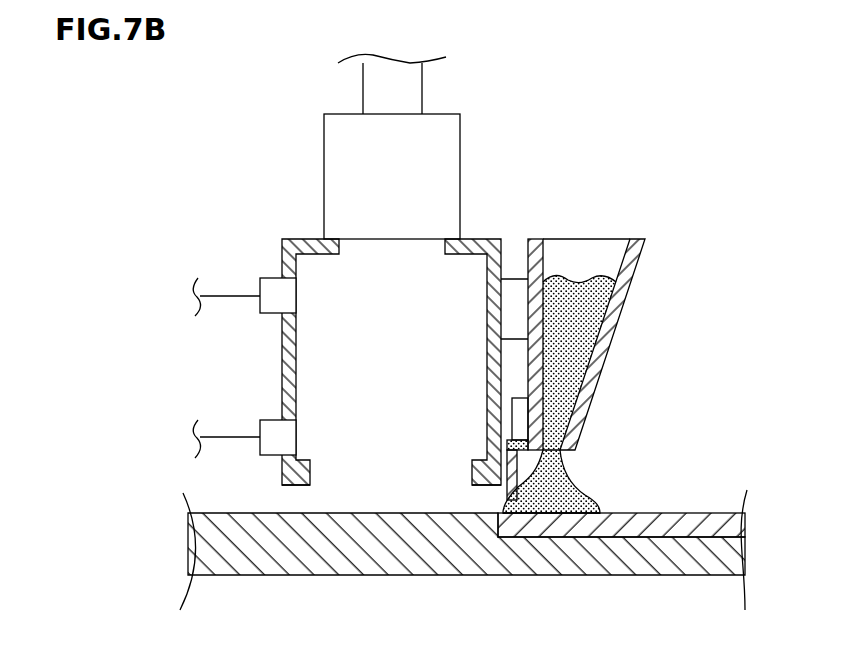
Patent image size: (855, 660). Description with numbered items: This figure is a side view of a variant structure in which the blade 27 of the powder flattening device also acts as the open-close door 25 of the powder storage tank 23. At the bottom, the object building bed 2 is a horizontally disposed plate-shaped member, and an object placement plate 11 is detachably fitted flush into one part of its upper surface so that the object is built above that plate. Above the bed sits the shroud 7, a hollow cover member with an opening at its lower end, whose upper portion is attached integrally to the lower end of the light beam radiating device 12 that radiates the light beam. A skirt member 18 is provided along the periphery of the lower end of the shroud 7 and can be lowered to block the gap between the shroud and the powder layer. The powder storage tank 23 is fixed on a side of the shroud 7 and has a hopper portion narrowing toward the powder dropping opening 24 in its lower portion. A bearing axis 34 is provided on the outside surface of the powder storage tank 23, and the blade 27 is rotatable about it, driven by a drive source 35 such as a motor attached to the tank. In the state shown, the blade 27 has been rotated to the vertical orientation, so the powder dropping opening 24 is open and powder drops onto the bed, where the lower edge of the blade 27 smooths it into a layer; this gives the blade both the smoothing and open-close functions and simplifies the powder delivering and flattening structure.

The object building bed 2 is at (405, 550).
The shroud 7 is at (478, 242).
The object placement plate 11 is at (668, 527).
The light beam radiating device 12 is at (448, 162).
The skirt member 18 is at (310, 468).
The powder storage tank 23 is at (636, 252).
The powder dropping opening 24 is at (565, 428).
The open-close door 25 is at (551, 574).
The blade 27 is at (541, 561).
The bearing axis 34 is at (507, 447).
The drive source 35 is at (527, 387).